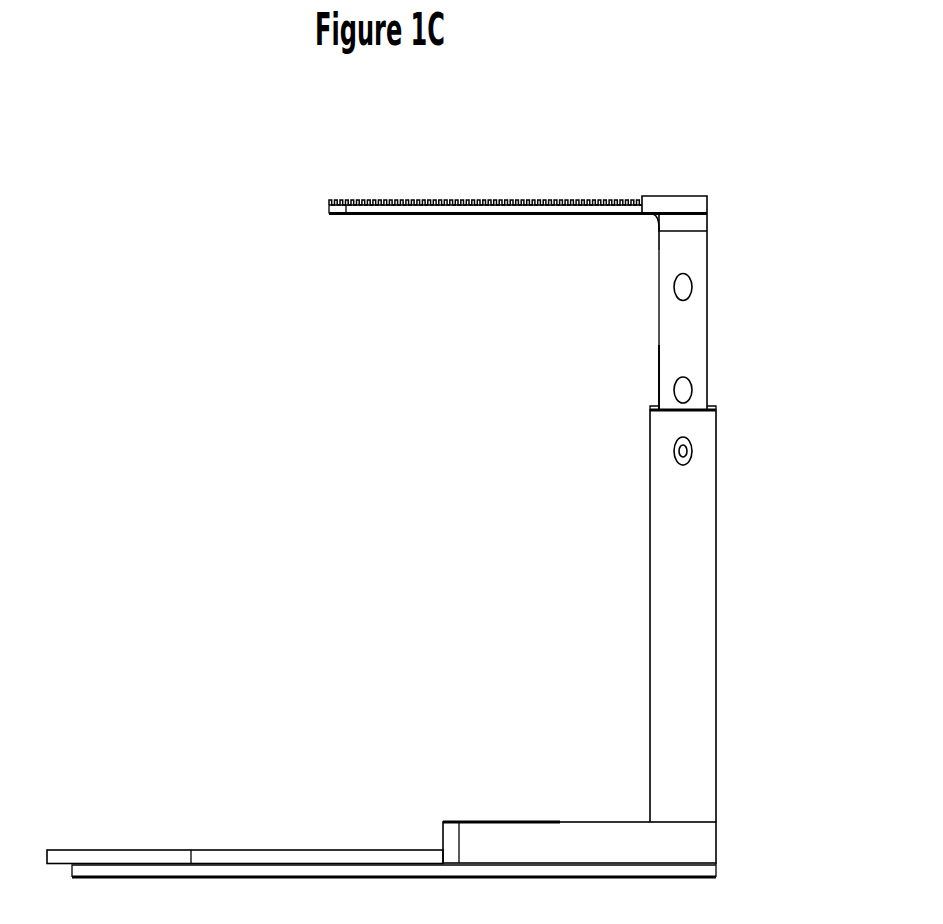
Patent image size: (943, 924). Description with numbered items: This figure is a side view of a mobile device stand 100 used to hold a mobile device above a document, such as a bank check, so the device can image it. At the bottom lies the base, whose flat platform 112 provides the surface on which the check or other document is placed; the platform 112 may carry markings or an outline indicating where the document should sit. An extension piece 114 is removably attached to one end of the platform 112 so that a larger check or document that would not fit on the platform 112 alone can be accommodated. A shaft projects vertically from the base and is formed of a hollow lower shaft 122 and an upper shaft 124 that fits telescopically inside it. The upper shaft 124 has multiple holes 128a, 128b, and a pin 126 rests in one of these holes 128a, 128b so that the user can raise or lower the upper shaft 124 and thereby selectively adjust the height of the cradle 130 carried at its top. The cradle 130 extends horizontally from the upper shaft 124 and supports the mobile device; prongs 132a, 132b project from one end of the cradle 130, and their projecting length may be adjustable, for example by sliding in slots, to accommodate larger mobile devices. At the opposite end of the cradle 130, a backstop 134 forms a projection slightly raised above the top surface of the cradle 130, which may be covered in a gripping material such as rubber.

The mobile device stand 100 is at (219, 330).
The platform 112 is at (245, 787).
The extension piece 114 is at (390, 794).
The lower shaft 122 is at (579, 739).
The upper shaft 124 is at (675, 312).
The pin 126 is at (725, 614).
The hole 128a is at (624, 290).
The hole 128b is at (637, 375).
The cradle 130 is at (518, 154).
The prong 132a is at (491, 307).
The prong 132b is at (518, 372).
The backstop 134 is at (664, 148).